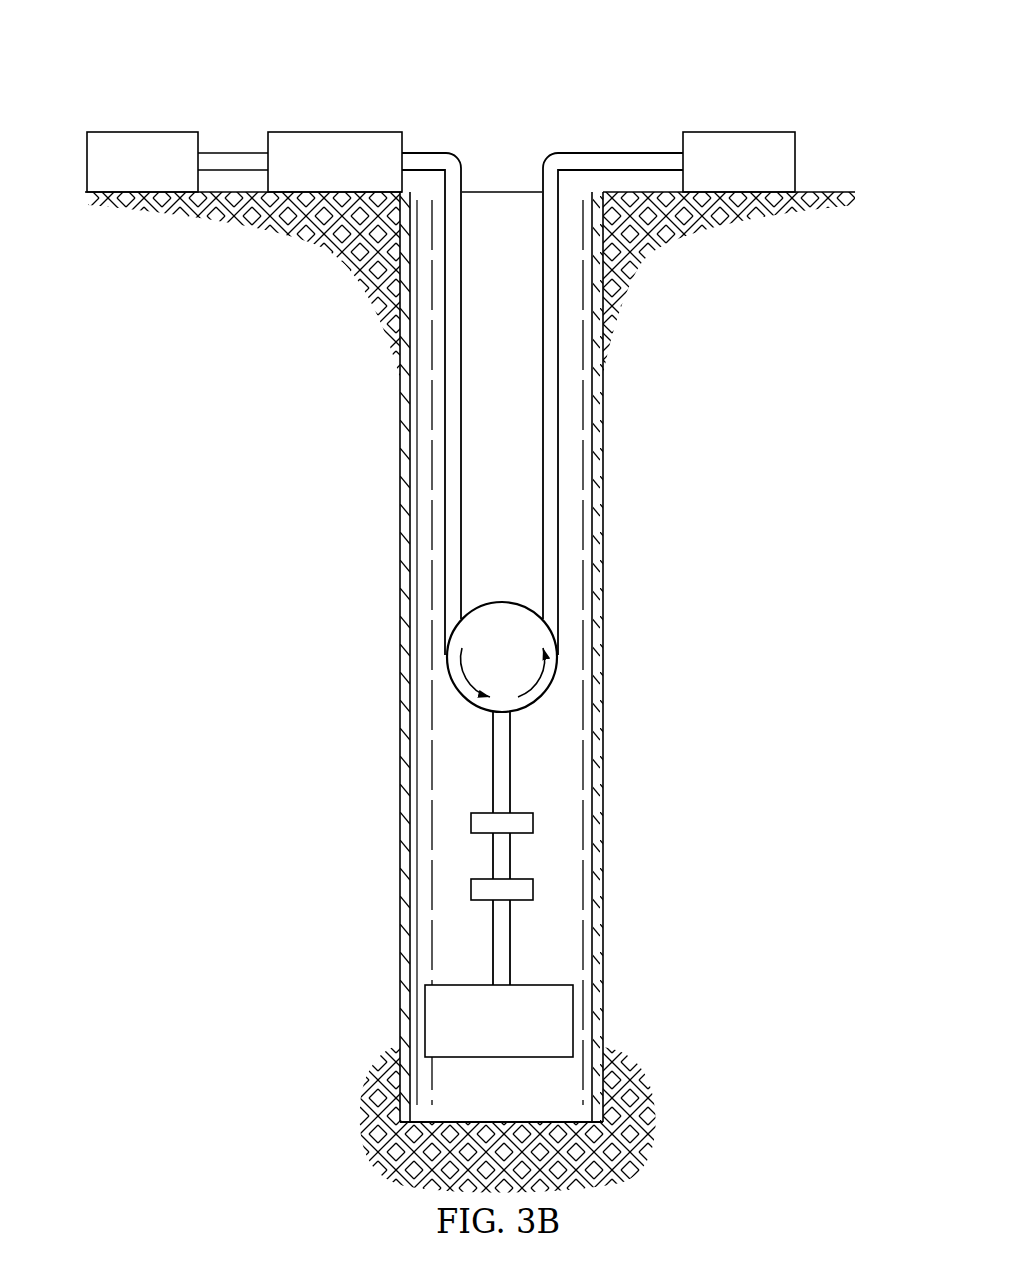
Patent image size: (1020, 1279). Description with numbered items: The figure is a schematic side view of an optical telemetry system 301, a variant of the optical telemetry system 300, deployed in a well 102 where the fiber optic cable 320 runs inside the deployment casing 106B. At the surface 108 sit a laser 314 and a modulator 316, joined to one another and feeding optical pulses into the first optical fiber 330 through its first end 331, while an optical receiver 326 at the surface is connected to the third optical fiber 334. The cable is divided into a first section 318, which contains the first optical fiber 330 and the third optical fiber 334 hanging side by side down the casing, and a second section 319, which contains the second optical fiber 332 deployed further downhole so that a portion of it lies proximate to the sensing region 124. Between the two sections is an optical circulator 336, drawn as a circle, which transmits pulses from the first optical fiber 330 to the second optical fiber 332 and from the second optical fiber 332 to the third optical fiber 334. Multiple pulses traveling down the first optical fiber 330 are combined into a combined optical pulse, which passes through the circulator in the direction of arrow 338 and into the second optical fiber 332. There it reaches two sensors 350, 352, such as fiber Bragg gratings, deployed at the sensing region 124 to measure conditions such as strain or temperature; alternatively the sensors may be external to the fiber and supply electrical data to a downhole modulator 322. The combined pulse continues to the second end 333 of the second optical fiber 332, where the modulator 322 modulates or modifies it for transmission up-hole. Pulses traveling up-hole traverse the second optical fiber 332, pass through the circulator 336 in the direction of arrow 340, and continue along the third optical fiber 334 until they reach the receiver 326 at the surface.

The optical telemetry system 300 is at (278, 60).
The well 102 is at (535, 88).
The laser 314 is at (145, 132).
The modulator 316 is at (331, 132).
The first end of the first optical fiber 331 is at (402, 152).
The optical receiver 326 is at (740, 132).
The surface 108 is at (835, 192).
The deployment casing 106B is at (400, 392).
The optical telemetry system 301 is at (355, 446).
The first optical fiber 330 is at (464, 430).
The first section 318 is at (445, 486).
The third optical fiber 334 is at (543, 516).
The fiber optic cable 320 is at (437, 545).
The optical circulator 336 is at (497, 602).
The arrow 338 is at (468, 695).
The arrow 340 is at (550, 690).
The second section 319 is at (493, 762).
The second optical fiber 332 is at (510, 790).
The sensor 350 is at (471, 822).
The sensor 352 is at (471, 887).
The sensing region 124 is at (290, 878).
The second end of the second optical fiber 333 is at (510, 983).
The downhole modulator 322 is at (532, 1058).